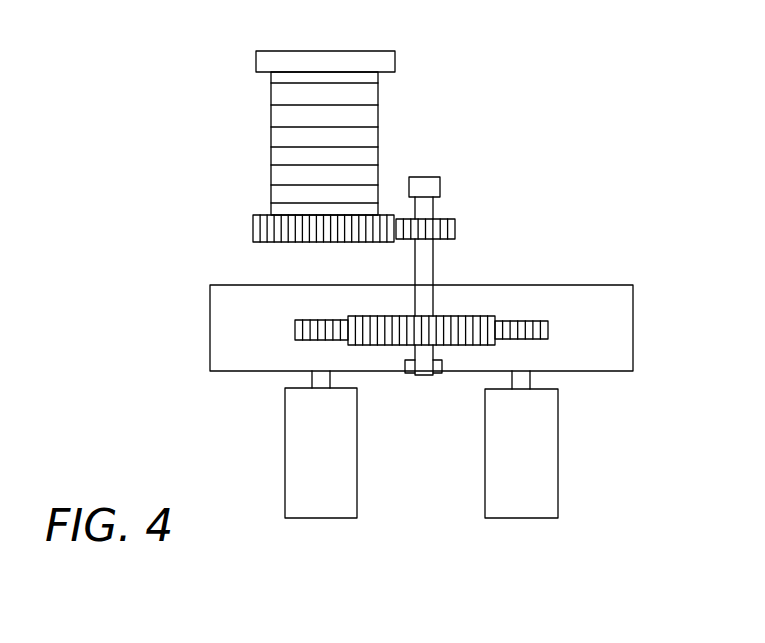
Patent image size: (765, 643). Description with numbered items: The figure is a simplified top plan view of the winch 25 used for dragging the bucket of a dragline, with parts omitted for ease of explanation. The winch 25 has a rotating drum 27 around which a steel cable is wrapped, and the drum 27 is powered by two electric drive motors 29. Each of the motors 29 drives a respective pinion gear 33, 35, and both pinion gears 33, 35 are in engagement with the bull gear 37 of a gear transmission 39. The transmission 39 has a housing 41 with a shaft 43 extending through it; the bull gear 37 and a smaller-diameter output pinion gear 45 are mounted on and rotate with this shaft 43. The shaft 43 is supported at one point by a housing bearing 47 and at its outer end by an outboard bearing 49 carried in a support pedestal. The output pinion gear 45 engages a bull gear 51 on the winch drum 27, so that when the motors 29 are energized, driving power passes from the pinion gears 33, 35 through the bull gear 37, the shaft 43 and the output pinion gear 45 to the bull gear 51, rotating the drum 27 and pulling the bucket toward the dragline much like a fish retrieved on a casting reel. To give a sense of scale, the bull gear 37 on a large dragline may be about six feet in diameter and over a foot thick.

The winch 25 is at (405, 308).
The rotating drum 27 is at (392, 60).
The electric drive motors 29 is at (288, 432).
The pinion gear 33 is at (295, 327).
The pinion gear 35 is at (548, 329).
The bull gear 37 is at (465, 317).
The gear transmission 39 is at (443, 287).
The housing 41 is at (633, 310).
The shaft 43 is at (415, 262).
The output pinion gear 45 is at (455, 227).
The housing bearing 47 is at (441, 375).
The outboard bearing 49 is at (441, 185).
The bull gear 51 is at (253, 227).